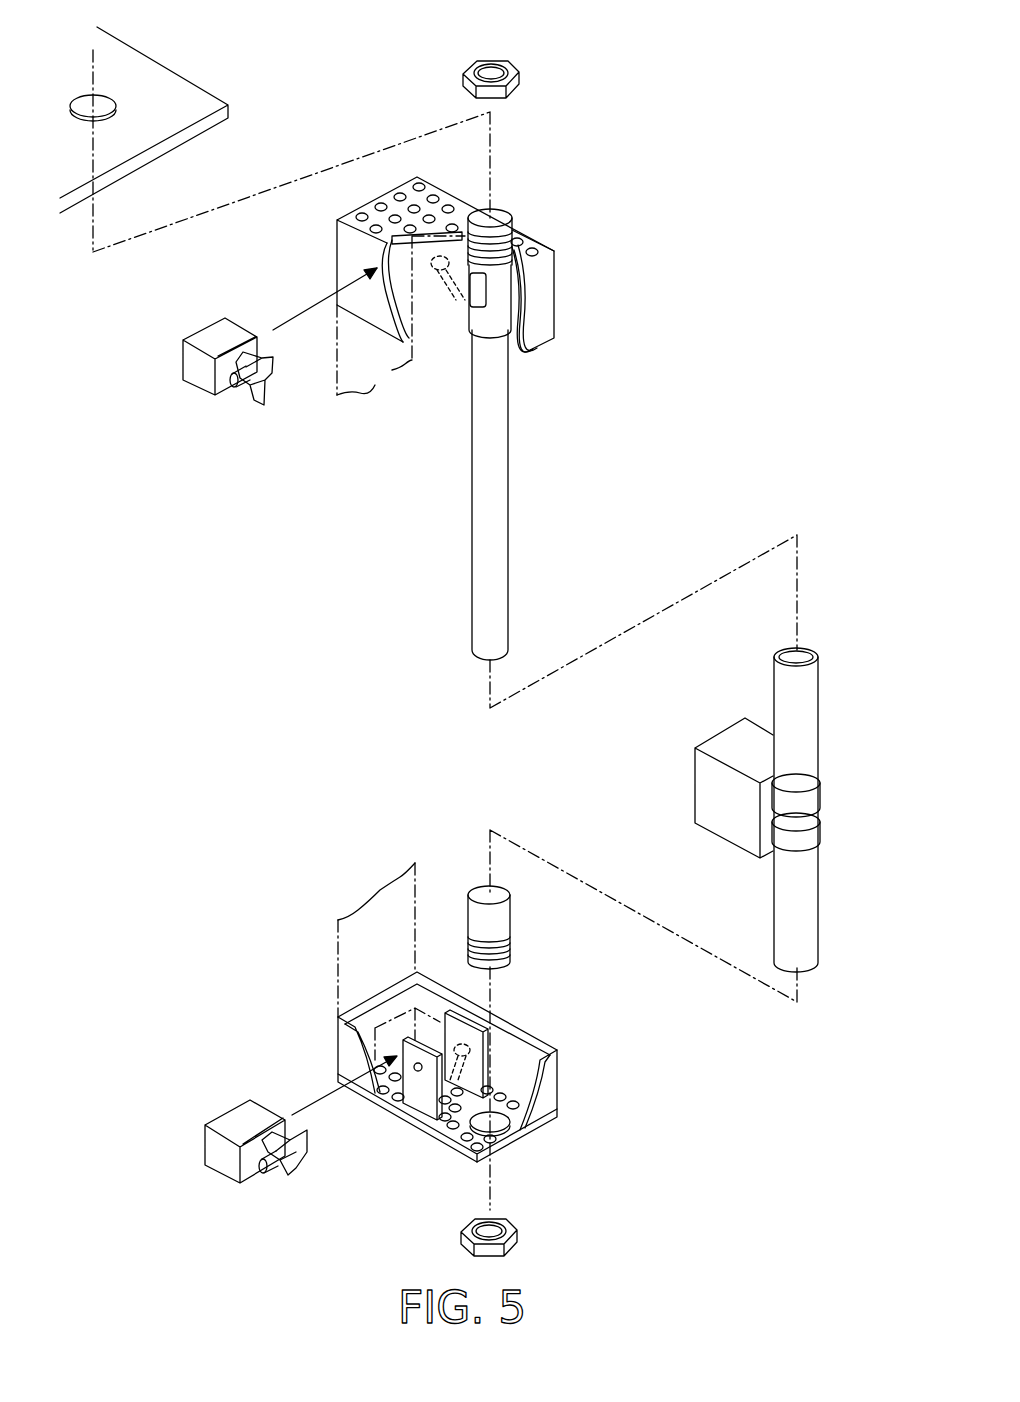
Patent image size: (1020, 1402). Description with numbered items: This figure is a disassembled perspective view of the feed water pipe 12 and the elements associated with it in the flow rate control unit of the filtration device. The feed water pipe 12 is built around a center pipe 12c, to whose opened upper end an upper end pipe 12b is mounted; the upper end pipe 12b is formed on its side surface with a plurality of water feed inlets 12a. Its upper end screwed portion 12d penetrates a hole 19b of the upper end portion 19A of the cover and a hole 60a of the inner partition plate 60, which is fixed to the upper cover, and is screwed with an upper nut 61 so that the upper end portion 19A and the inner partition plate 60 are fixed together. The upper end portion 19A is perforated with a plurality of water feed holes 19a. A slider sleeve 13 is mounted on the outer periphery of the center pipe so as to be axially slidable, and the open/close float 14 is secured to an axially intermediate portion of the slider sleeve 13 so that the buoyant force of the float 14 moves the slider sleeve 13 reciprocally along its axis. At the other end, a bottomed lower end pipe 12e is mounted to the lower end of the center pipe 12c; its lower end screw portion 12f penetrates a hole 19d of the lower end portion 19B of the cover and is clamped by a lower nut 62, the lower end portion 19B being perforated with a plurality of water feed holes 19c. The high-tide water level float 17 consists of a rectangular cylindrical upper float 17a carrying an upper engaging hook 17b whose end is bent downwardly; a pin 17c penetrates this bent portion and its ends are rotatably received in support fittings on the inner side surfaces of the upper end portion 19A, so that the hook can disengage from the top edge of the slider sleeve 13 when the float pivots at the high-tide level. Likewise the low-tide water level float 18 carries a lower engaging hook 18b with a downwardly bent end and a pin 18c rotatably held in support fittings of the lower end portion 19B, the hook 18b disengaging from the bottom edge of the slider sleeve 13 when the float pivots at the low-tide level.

The inner partition plate 60 is at (200, 98).
The hole 60a is at (108, 104).
The upper nut 61 is at (520, 79).
The upper end portion 19A is at (473, 264).
The water feed holes 19a is at (380, 207).
The hole 19b is at (527, 277).
The feed water pipe 12 is at (502, 422).
The water feed inlets 12a is at (472, 301).
The upper end pipe 12b is at (498, 298).
The center pipe 12c is at (468, 518).
The upper end screwed portion 12d is at (508, 230).
The lower end pipe 12e is at (470, 914).
The lower end screw portion 12f is at (510, 950).
The slider sleeve 13 is at (812, 737).
The open/close float 14 is at (695, 782).
The high-tide water level float 17 is at (202, 364).
The upper float 17a is at (197, 361).
The upper engaging hook 17b is at (257, 403).
The pin 17c is at (233, 392).
The low-tide water level float 18 is at (248, 1156).
The lower engaging hook 18b is at (288, 1172).
The pin 18c is at (265, 1180).
The lower end portion 19B is at (493, 1095).
The water feed holes 19c is at (390, 1090).
The hole 19d is at (483, 1130).
The lower nut 62 is at (520, 1234).